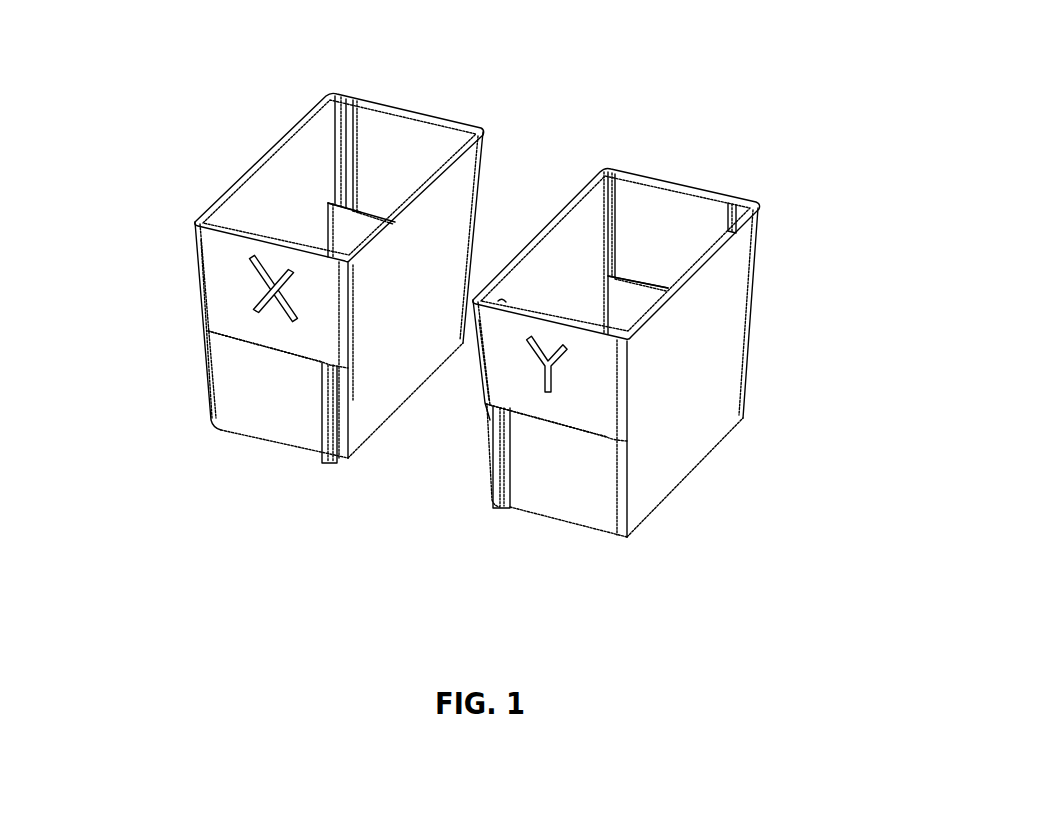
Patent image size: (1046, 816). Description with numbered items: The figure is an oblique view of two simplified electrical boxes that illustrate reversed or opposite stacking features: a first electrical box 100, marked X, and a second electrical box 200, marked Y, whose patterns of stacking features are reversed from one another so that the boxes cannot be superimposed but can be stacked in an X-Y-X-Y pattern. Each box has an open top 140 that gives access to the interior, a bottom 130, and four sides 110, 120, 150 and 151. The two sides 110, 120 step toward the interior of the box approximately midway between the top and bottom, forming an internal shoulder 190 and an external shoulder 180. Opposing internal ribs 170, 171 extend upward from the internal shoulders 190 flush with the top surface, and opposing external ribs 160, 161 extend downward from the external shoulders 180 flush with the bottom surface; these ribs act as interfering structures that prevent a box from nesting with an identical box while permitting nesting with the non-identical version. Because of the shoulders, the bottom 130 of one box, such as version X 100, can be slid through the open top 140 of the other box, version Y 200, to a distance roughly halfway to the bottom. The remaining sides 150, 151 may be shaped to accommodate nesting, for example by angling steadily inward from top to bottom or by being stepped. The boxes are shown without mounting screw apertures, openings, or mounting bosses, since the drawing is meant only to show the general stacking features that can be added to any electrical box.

The first electrical box 100 is at (250, 452).
The second electrical box 200 is at (543, 530).
The side 110 is at (295, 422).
The side 120 is at (475, 216).
The bottom 130 is at (360, 444).
The open top 140 is at (233, 225).
The side 150 is at (438, 337).
The side 151 is at (202, 367).
The external rib 160 is at (333, 456).
The external rib 161 is at (503, 478).
The internal rib 170 is at (352, 100).
The internal rib 171 is at (504, 302).
The external shoulder 180 is at (242, 338).
The internal shoulder 190 is at (338, 199).